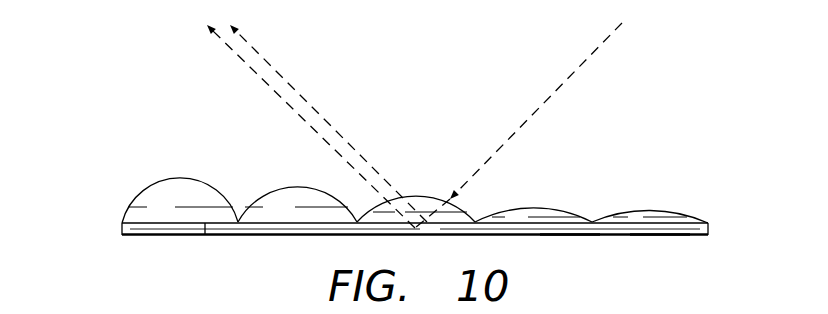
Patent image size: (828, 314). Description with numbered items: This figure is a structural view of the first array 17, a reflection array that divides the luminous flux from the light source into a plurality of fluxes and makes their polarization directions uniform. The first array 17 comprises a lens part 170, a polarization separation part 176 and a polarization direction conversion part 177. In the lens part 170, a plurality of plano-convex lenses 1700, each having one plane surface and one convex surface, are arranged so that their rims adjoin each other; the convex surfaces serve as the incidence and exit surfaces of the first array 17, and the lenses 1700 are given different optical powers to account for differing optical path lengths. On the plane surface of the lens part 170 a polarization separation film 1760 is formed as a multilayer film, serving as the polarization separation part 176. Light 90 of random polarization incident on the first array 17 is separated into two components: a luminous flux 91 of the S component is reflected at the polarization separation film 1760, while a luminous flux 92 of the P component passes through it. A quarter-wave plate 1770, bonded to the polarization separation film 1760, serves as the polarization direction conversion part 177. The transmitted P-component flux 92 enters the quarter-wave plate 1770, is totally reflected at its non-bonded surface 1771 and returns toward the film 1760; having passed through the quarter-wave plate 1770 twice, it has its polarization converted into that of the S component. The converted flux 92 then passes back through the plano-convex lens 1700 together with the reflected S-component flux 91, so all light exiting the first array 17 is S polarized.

The first array 17 is at (725, 231).
The lens part 170 is at (104, 198).
The plano-convex lens 1700 is at (530, 208).
The polarization separation part 176 is at (108, 224).
The polarization direction conversion part 177 is at (106, 240).
The polarization separation film 1760 is at (205, 236).
The quarter-wave plate 1770 is at (560, 234).
The non-bonded surface 1771 is at (650, 235).
The light of random polarization 90 is at (527, 118).
The luminous flux of the S component 91 is at (312, 107).
The luminous flux of the P component 92 is at (290, 108).